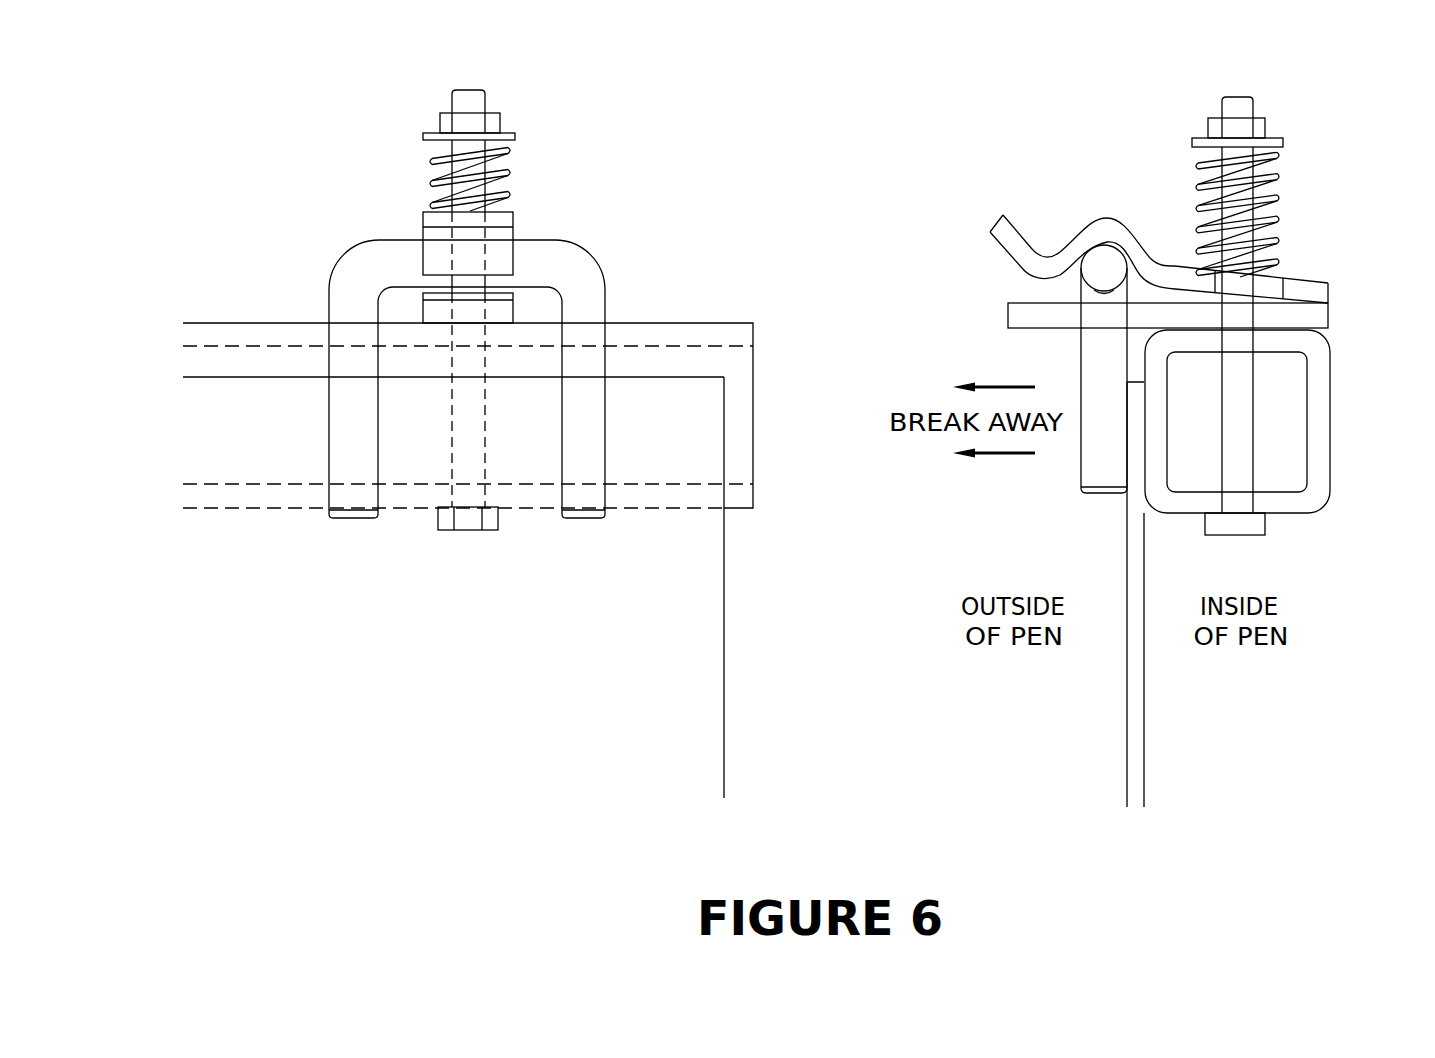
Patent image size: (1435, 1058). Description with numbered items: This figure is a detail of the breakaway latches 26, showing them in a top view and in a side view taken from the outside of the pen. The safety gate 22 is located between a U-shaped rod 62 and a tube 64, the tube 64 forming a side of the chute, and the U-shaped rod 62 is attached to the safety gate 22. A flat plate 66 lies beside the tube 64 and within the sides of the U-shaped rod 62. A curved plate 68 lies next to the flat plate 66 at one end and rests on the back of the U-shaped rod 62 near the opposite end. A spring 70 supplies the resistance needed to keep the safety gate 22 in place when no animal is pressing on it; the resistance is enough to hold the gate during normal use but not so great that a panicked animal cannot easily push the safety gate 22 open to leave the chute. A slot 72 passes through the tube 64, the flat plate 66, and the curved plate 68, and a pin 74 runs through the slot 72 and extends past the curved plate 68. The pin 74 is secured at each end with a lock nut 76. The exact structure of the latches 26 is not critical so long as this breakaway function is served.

The safety gate 22 is at (1126, 653).
The breakaway latches 26 is at (867, 225).
The U-shaped rod 62 is at (354, 243).
The tube 64 is at (709, 321).
The flat plate 66 is at (516, 306).
The curved plate 68 is at (418, 208).
The spring 70 is at (518, 182).
The slot 72 is at (1283, 272).
The pin 74 is at (468, 531).
The lock nut 76 is at (503, 110).